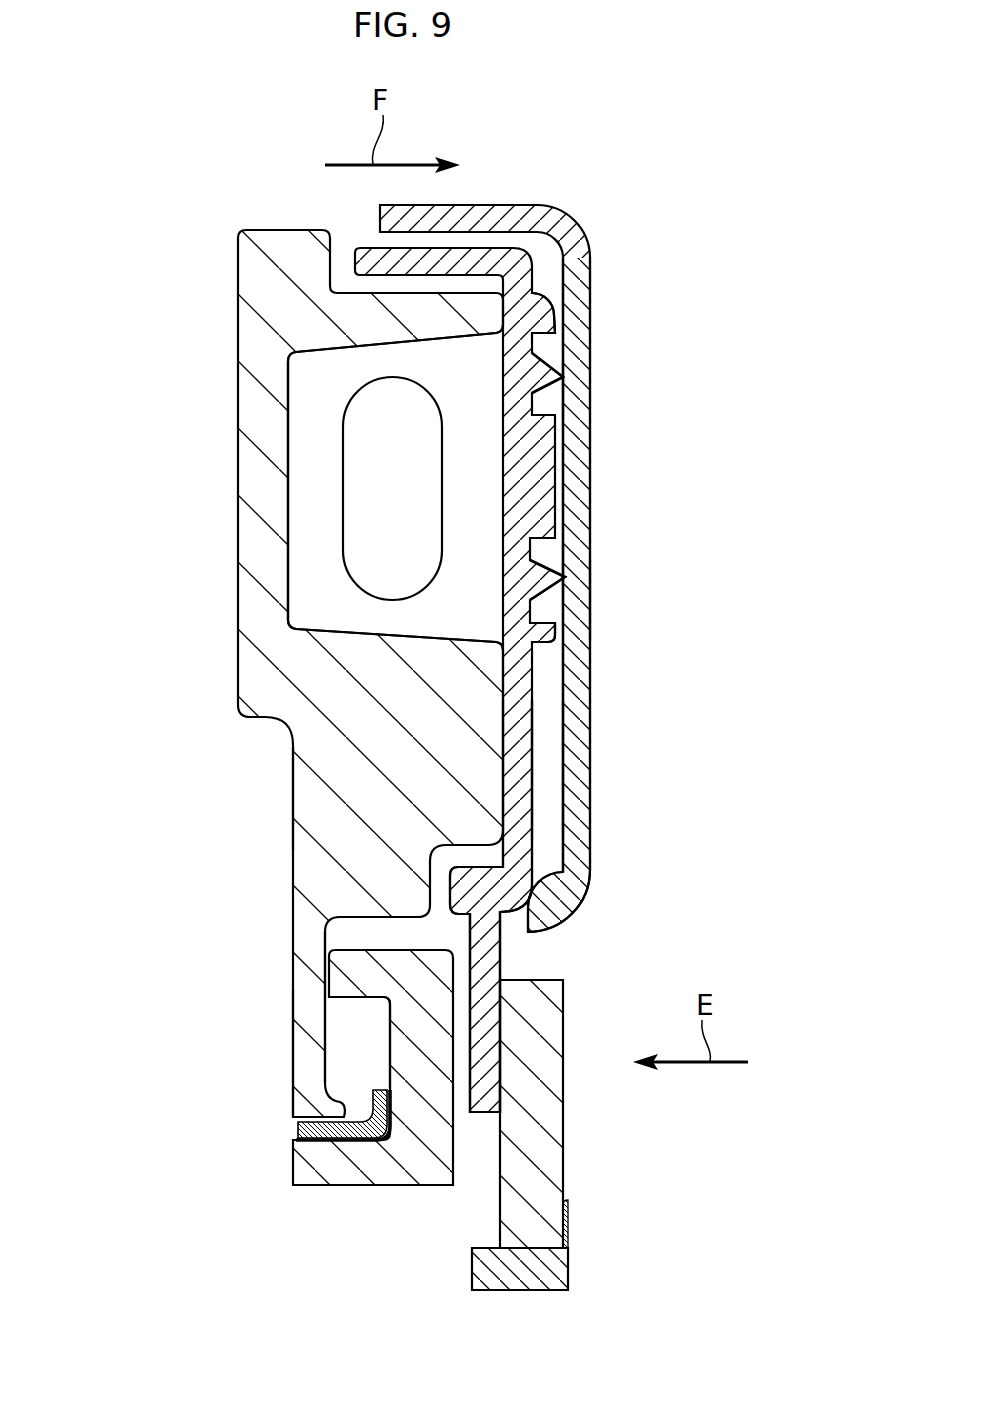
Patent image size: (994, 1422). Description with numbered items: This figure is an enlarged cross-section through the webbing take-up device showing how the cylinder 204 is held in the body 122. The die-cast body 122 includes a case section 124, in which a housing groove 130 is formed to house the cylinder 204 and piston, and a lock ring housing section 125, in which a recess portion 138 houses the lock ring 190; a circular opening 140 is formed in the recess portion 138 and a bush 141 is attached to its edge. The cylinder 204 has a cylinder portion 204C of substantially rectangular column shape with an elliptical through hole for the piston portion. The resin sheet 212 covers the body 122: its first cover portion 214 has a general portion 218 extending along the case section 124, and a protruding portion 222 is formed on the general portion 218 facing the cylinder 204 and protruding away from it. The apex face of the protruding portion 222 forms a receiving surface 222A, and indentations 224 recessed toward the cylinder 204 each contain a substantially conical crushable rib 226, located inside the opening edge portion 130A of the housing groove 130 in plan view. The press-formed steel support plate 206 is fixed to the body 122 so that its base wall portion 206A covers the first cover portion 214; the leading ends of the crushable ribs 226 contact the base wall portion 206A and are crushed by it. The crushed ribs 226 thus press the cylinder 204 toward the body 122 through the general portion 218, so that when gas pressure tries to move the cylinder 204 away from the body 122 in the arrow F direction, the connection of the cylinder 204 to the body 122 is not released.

The body 122 is at (293, 830).
The case section 124 is at (292, 782).
The lock ring housing section 125 is at (292, 1052).
The housing groove 130 is at (289, 428).
The opening edge portion of the housing groove 130A is at (538, 345).
The recess portion 138 is at (331, 1014).
The opening 140 is at (297, 1122).
The bush 141 is at (296, 1134).
The lock ring 190 is at (340, 1187).
The cylinder 204 is at (288, 517).
The cylinder portion 204C is at (283, 517).
The support plate 206 is at (598, 568).
The base wall portion 206A is at (592, 592).
The sheet 212 is at (536, 823).
The first cover portion 214 is at (548, 823).
The general portion 218 is at (534, 771).
The protruding portion 222 is at (565, 483).
The receiving surface 222A is at (565, 483).
The indentations 224 is at (560, 413).
The crushable rib 226 is at (563, 378).